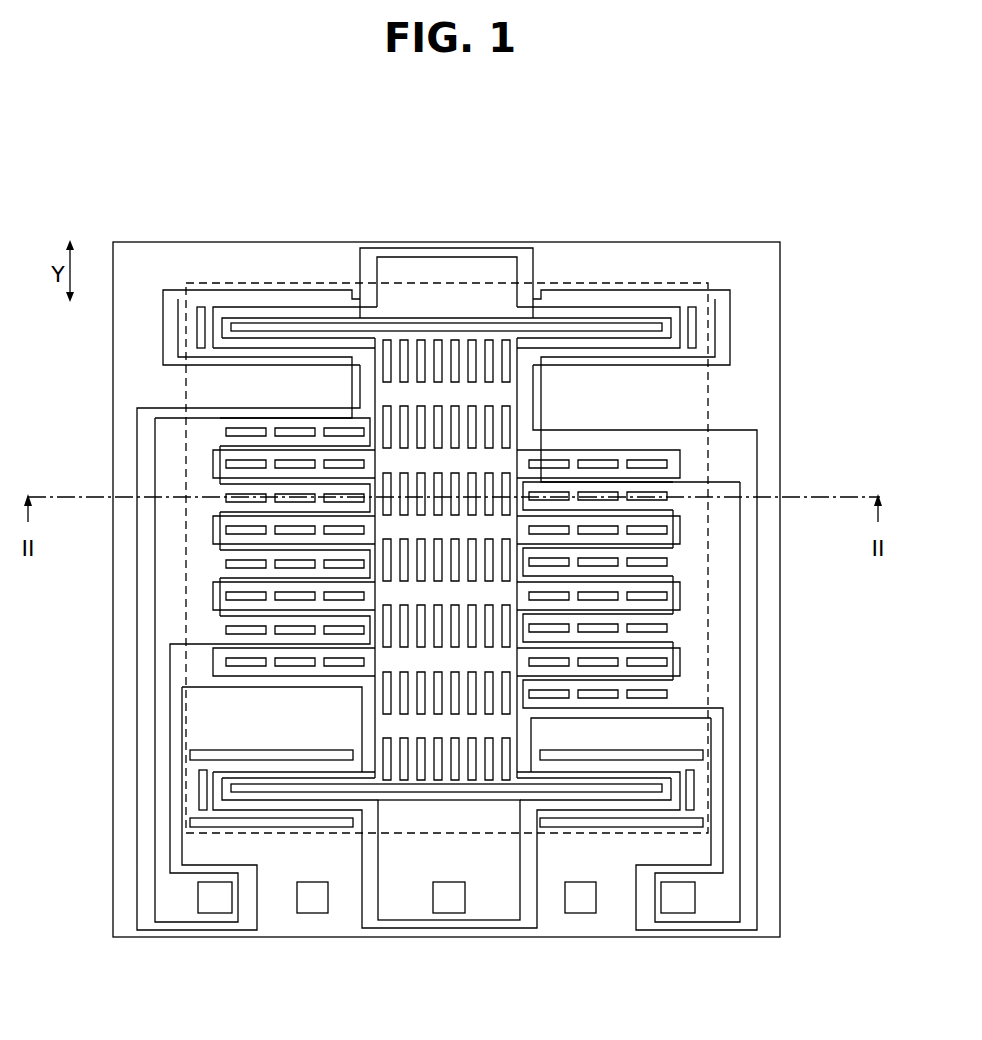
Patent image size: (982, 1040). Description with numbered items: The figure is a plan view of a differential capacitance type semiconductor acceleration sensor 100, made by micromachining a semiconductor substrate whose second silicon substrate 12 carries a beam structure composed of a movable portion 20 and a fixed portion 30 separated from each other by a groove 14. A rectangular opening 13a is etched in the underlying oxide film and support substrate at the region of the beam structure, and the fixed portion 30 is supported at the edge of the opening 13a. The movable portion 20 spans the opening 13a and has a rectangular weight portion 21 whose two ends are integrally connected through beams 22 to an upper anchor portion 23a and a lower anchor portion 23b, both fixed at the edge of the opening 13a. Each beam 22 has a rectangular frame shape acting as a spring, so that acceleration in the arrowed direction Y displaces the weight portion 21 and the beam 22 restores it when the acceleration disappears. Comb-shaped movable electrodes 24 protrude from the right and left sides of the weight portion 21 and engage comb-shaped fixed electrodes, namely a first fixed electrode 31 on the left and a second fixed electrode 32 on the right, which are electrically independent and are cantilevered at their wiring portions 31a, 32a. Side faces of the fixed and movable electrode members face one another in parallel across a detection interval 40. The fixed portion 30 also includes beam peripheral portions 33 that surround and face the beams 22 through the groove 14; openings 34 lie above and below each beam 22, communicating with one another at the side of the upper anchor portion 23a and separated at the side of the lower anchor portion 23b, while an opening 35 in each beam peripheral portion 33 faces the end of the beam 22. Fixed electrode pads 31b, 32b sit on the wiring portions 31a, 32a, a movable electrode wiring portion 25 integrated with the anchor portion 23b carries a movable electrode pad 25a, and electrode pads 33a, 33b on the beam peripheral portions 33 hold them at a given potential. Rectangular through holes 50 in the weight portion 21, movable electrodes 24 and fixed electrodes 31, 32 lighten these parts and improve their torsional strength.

The semiconductor acceleration sensor 100 is at (166, 236).
The second silicon substrate 12 is at (638, 242).
The opening 13a is at (740, 432).
The groove 14 is at (366, 290).
The movable portion 20 is at (400, 402).
The weight portion 21 is at (518, 432).
The beam 22 is at (640, 318).
The upper anchor portion 23a is at (487, 270).
The lower anchor portion 23b is at (392, 905).
The movable electrode 24 is at (240, 470).
The movable electrode wiring portion 25 is at (490, 875).
The movable electrode pad 25a is at (450, 905).
The fixed portion 30 is at (746, 272).
The first fixed electrode 31 is at (240, 418).
The wiring portion 31a is at (165, 625).
The fixed electrode pad 31b is at (208, 905).
The second fixed electrode 32 is at (640, 498).
The wiring portion 32a is at (722, 625).
The fixed electrode pad 32b is at (690, 905).
The beam peripheral portion 33 is at (625, 372).
The electrode pad 33a is at (305, 905).
The electrode pad 33b is at (583, 905).
The opening 34 is at (250, 292).
The opening 35 is at (200, 335).
The detection interval 40 is at (240, 444).
The through hole 50 is at (390, 415).